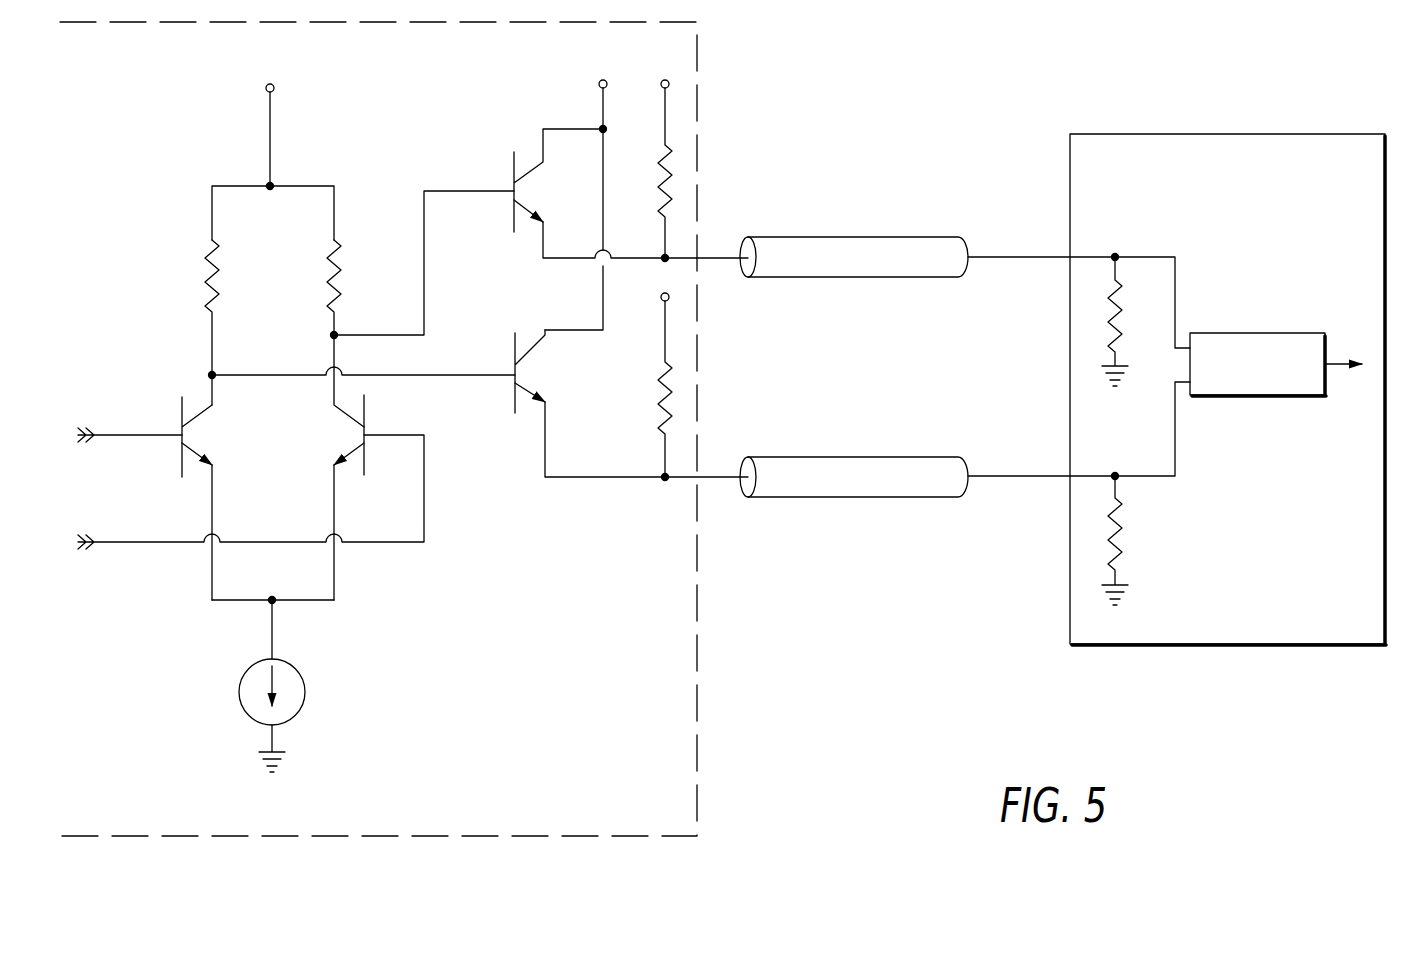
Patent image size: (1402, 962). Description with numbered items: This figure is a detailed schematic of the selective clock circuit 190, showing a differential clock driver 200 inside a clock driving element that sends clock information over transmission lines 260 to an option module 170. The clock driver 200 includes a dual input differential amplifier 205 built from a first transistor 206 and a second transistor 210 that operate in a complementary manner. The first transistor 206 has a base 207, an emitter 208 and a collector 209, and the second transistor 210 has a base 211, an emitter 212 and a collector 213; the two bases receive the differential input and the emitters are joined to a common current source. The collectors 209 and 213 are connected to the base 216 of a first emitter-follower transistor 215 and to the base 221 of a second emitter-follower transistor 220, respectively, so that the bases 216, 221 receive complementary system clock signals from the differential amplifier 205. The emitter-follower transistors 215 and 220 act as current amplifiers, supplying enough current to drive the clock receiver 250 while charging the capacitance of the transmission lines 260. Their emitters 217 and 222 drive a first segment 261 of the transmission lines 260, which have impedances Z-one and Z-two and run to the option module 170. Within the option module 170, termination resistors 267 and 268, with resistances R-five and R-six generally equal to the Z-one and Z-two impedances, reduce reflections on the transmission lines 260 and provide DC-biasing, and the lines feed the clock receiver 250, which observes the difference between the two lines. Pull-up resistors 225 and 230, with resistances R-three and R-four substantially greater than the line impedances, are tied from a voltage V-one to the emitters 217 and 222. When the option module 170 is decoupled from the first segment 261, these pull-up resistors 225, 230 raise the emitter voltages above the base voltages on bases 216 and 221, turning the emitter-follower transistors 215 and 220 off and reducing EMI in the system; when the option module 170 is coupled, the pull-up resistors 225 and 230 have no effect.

The option module 170 is at (1210, 645).
The selective clock circuit 190 is at (740, 592).
The clock driver 200 is at (479, 531).
The differential amplifier 205 is at (161, 597).
The first transistor 206 is at (231, 428).
The base 207 is at (137, 435).
The emitter 208 is at (190, 463).
The collector 209 is at (198, 410).
The second transistor 210 is at (318, 447).
The base 211 is at (140, 542).
The emitter 212 is at (350, 456).
The collector 213 is at (345, 405).
The emitter-follower transistor 215 is at (525, 236).
The base 216 is at (408, 335).
The emitter 217 is at (522, 202).
The emitter-follower transistor 220 is at (530, 340).
The base 221 is at (470, 375).
The emitter 222 is at (526, 383).
The pull-up resistor 225 is at (694, 155).
The pull-up resistor 230 is at (690, 392).
The clock receiver 250 is at (1225, 333).
The transmission lines 260 is at (1043, 345).
The first segment 261 is at (717, 258).
The termination resistor 267 is at (1107, 318).
The termination resistor 268 is at (1110, 546).